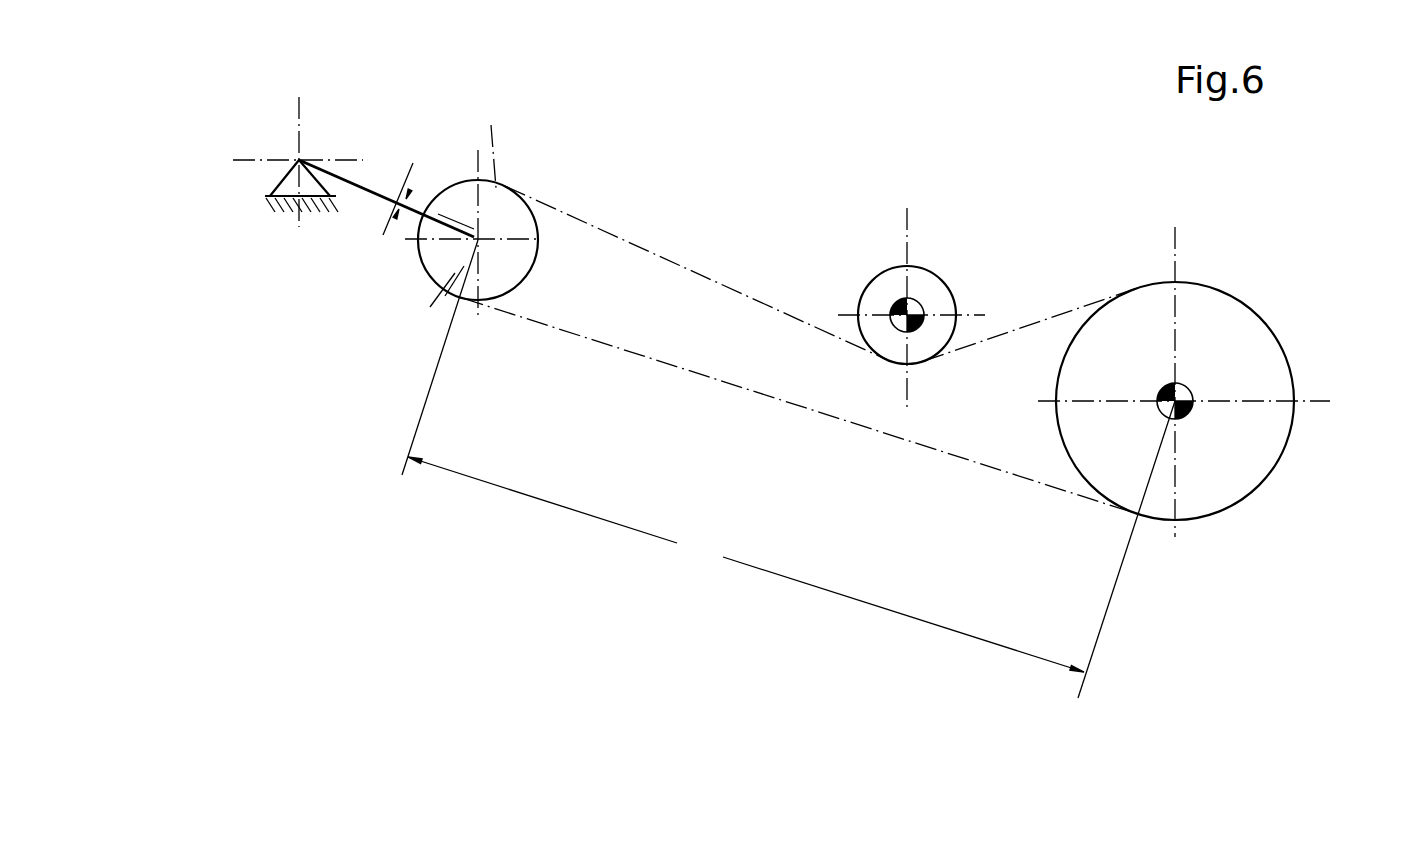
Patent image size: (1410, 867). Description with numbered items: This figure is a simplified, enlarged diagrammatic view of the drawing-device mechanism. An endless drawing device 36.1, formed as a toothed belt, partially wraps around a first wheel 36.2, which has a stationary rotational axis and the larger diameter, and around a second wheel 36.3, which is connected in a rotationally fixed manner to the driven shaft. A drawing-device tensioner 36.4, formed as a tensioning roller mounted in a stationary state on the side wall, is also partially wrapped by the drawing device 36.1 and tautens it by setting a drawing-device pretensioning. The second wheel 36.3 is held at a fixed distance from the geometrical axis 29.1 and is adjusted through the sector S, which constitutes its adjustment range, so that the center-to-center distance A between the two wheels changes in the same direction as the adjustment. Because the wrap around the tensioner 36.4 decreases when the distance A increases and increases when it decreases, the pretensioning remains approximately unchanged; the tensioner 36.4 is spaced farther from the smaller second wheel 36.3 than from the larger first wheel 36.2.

The geometrical axis 29.1 is at (299, 160).
The sector S is at (413, 163).
The second wheel 36.3 is at (438, 270).
The drawing-device tensioner 36.4 is at (940, 292).
The first wheel 36.2 is at (1243, 473).
The endless drawing device 36.1 is at (975, 462).
The center-to-center distance A is at (788, 469).